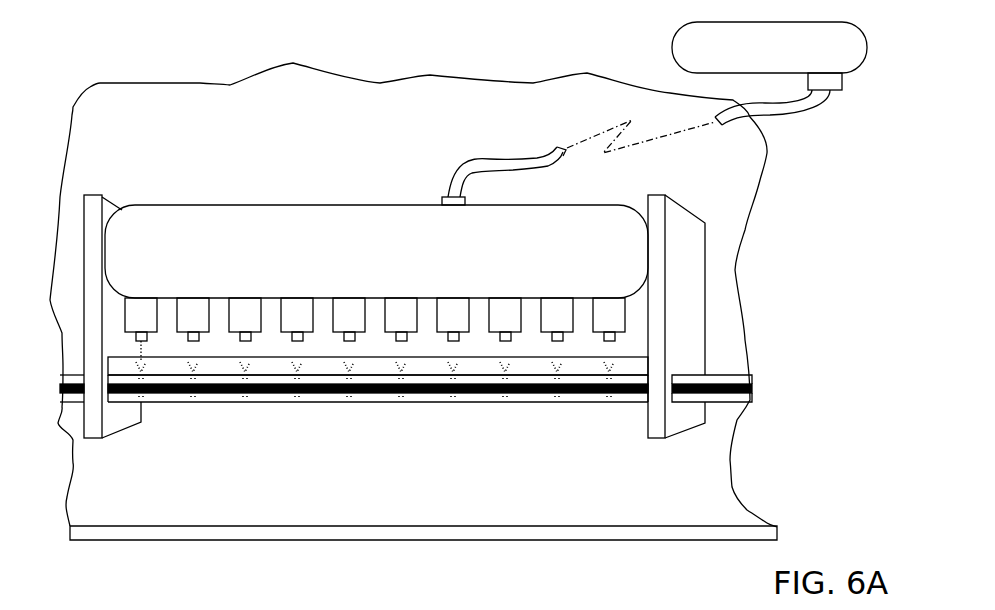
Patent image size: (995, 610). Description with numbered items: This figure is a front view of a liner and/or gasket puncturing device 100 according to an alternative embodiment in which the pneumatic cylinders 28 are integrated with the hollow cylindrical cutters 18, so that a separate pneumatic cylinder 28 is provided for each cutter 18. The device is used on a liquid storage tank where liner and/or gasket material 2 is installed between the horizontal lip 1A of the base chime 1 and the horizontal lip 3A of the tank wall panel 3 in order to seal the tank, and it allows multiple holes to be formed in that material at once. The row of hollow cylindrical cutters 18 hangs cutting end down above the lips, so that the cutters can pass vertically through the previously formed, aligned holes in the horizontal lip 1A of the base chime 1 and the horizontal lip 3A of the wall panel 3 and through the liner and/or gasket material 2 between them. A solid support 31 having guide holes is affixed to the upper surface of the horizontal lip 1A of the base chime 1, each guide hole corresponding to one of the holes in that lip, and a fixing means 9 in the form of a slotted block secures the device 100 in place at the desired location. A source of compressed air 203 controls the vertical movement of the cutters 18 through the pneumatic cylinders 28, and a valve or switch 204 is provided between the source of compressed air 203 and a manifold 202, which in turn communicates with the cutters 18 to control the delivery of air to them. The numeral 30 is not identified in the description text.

The liner and/or gasket puncturing device 100 is at (399, 112).
The tank wall panel 3 is at (413, 295).
The fixing means 9 is at (682, 317).
The pneumatic cylinders 28 is at (203, 324).
The hollow cylindrical cutters 18 is at (243, 333).
The print medium 30 is at (143, 365).
The solid support having guide holes 31 is at (117, 362).
The liner and/or gasket material 2 is at (60, 383).
The horizontal lip of the tank wall panel 3A is at (742, 370).
The horizontal lip of the base chime 1A is at (742, 402).
The base chime 1 is at (329, 502).
The manifold 202 is at (434, 176).
The source of compressed air 203 is at (789, 62).
The valve or switch 204 is at (808, 80).